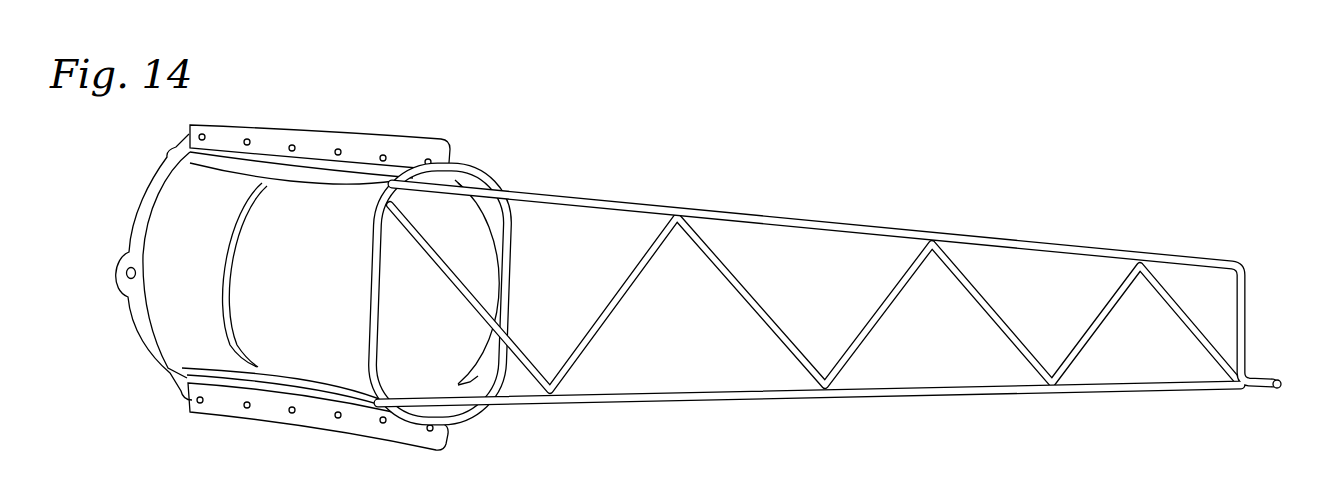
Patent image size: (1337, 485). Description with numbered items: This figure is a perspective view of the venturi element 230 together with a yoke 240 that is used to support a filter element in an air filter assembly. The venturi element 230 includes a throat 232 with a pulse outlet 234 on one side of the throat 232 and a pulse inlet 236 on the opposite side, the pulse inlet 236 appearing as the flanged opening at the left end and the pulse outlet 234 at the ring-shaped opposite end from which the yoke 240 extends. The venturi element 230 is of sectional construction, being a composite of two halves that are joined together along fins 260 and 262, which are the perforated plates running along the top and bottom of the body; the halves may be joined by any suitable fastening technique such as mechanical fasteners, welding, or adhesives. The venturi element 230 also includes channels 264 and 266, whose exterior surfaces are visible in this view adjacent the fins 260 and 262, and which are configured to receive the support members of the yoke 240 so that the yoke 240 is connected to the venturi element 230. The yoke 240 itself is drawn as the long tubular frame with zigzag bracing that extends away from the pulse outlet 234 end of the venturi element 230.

The venturi element 230 is at (535, 105).
The throat 232 is at (257, 369).
The pulse outlet 234 is at (351, 346).
The pulse inlet 236 is at (168, 222).
The yoke 240 is at (755, 206).
The fin 260 is at (363, 140).
The fin 262 is at (360, 432).
The channel 264 is at (262, 150).
The channel 266 is at (282, 388).